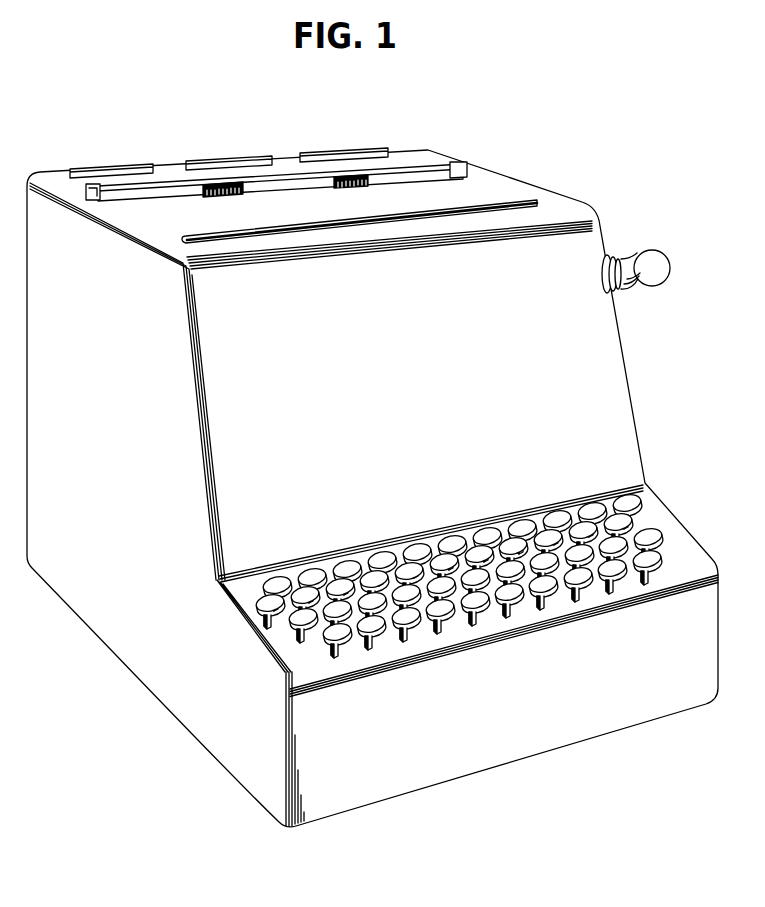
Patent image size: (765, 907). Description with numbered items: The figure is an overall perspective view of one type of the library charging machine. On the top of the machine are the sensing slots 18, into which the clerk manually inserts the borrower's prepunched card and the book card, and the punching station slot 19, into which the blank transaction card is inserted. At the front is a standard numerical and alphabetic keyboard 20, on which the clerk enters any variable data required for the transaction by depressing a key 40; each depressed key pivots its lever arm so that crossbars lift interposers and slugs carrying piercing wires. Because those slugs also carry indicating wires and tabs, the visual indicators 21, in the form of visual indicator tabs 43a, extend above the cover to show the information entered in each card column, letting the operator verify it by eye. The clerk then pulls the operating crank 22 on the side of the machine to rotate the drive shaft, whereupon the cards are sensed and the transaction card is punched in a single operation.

The sensing slots 18 is at (103, 169).
The punching station slot 19 is at (497, 204).
The keyboard 20 is at (663, 572).
The visual indicators 21 is at (242, 194).
The operating crank 22 is at (662, 268).
The key 40 is at (540, 593).
The visual indicator tab 43a is at (220, 195).